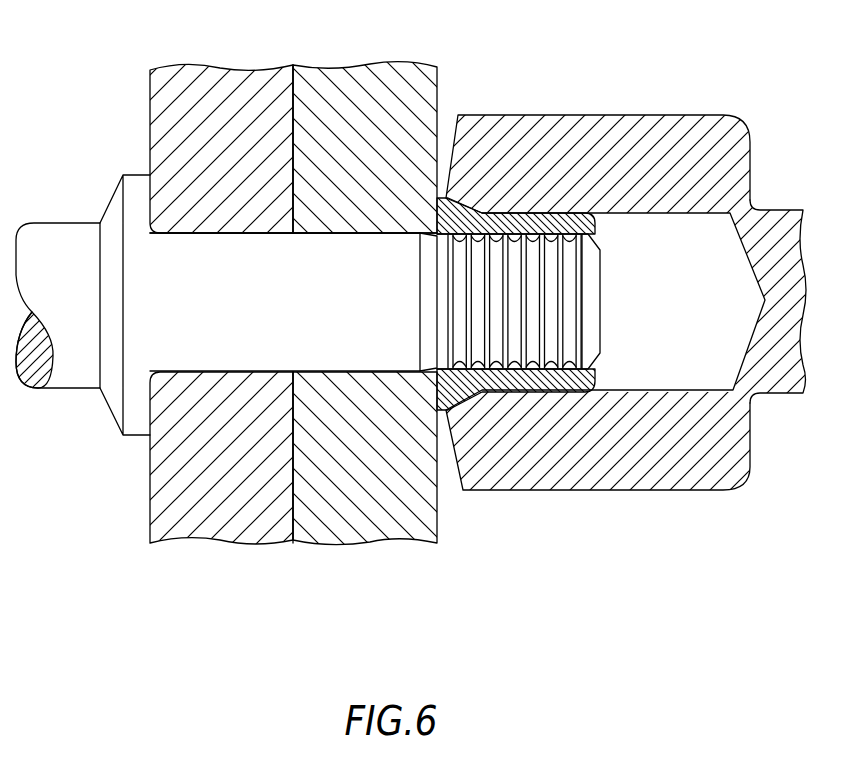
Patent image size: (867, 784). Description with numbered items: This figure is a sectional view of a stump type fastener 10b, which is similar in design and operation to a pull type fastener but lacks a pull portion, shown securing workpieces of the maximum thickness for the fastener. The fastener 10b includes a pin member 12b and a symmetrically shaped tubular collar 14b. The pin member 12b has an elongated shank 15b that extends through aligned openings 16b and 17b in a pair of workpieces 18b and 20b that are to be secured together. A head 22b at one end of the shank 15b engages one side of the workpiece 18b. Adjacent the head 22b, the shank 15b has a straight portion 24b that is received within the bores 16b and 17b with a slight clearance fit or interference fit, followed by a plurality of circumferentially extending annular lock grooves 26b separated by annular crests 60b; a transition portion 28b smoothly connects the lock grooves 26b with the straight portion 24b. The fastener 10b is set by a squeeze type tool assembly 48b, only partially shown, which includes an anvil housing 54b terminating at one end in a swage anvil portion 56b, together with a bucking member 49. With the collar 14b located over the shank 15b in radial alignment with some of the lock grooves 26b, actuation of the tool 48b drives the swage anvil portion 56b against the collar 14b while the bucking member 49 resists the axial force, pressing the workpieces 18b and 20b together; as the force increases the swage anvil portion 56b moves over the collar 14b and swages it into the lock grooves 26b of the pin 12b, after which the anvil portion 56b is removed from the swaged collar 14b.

The fastener 10b is at (337, 375).
The pin member 12b is at (305, 243).
The tubular collar 14b is at (512, 211).
The elongated shank 15b is at (167, 383).
The opening 16b is at (252, 232).
The opening 17b is at (352, 234).
The workpiece 18b is at (212, 85).
The workpiece 20b is at (348, 82).
The head 22b is at (108, 217).
The straight portion 24b is at (243, 309).
The lock grooves 26b is at (568, 226).
The transition portion 28b is at (428, 293).
The tool assembly 48b is at (78, 417).
The bucking member 49 is at (70, 237).
The anvil housing 54b is at (746, 130).
The swage anvil portion 56b is at (578, 123).
The annular crests 60b is at (577, 390).